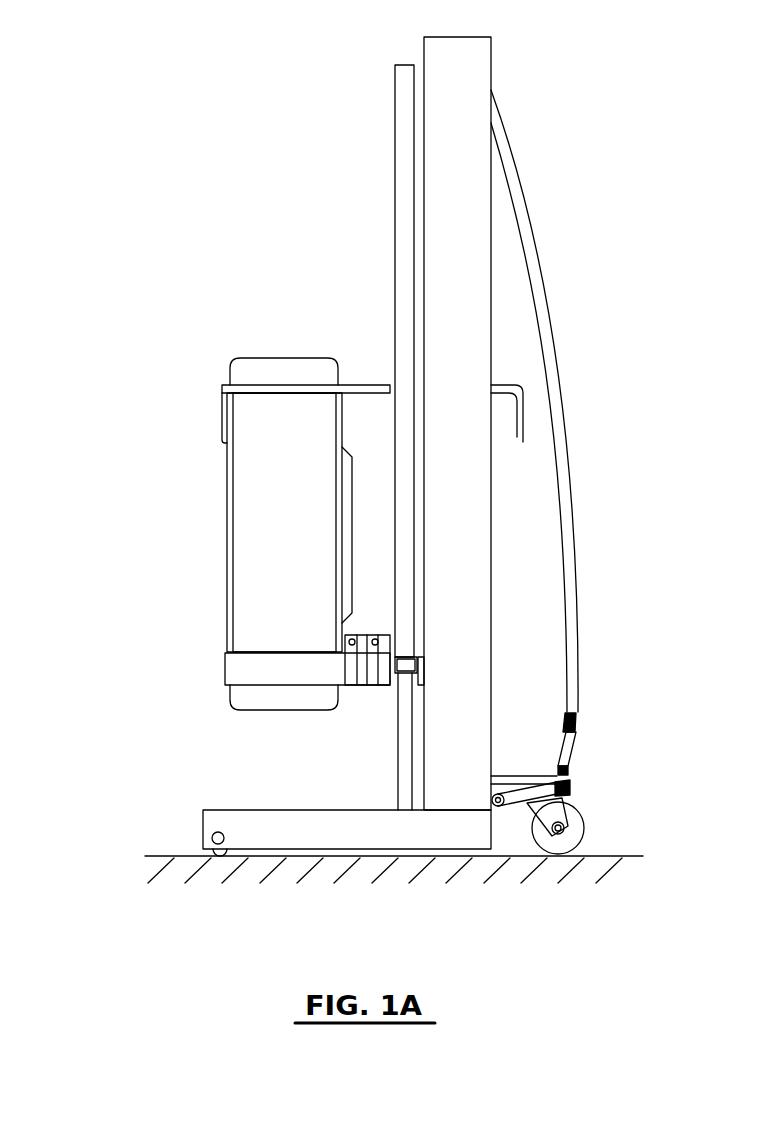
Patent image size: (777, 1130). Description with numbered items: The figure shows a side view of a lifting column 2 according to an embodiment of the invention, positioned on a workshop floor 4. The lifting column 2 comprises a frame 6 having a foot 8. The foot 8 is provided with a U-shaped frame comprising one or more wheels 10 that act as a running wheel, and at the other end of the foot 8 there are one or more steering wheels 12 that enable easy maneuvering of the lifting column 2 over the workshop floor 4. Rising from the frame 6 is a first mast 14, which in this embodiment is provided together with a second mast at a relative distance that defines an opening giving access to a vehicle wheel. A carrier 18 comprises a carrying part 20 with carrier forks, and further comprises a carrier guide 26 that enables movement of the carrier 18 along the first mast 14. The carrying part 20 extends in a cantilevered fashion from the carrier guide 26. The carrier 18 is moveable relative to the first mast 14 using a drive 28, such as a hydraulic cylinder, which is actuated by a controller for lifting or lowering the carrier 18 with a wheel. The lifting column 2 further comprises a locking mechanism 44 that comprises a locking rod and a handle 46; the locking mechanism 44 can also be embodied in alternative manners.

The lifting column 2 is at (305, 198).
The workshop floor 4 is at (588, 872).
The frame 6 is at (166, 747).
The foot 8 is at (283, 827).
The wheels 10 is at (203, 838).
The steering wheels 12 is at (572, 817).
The first mast 14 is at (462, 82).
The carrier 18 is at (155, 619).
The carrying part 20 is at (253, 673).
The carrier guide 26 is at (392, 443).
The drive 28 is at (372, 787).
The locking mechanism 44 is at (517, 385).
The handle 46 is at (517, 440).